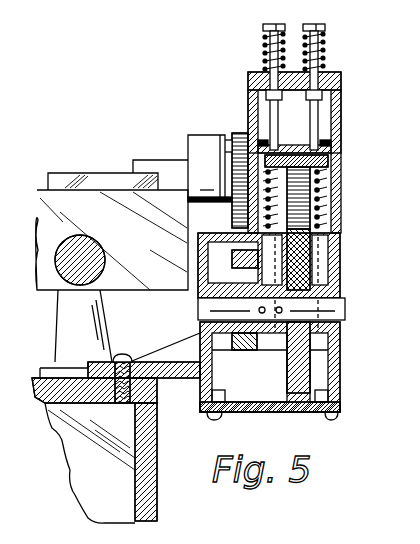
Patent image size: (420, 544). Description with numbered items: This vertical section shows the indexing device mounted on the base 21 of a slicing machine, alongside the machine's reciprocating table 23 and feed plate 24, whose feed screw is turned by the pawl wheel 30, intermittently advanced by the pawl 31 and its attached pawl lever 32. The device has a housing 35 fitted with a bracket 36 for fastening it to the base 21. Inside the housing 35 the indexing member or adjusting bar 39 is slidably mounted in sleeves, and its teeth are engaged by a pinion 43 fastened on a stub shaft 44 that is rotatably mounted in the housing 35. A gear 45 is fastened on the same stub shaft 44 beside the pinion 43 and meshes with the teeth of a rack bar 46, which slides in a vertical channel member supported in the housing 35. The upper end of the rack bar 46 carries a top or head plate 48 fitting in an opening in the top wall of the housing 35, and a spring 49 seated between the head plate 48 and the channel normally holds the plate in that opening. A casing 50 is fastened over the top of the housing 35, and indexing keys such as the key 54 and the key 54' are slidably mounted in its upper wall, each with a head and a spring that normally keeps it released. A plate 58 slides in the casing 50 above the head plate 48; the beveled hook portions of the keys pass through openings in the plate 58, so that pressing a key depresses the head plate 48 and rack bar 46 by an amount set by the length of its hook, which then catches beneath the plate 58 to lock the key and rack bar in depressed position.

The base 21 is at (152, 502).
The reciprocating table 23 is at (142, 290).
The feed plate 24 is at (107, 178).
The pawl wheel 30 is at (240, 133).
The pawl 31 is at (230, 142).
The pawl lever 32 is at (208, 141).
The housing 35 is at (340, 365).
The bracket 36 is at (182, 380).
The indexing member or adjusting bar 39 is at (234, 245).
The pinion 43 is at (240, 352).
The stub shaft 44 is at (340, 308).
The gear 45 is at (300, 250).
The rack bar 46 is at (300, 202).
The top or head plate 48 is at (330, 167).
The spring 49 is at (318, 213).
The casing 50 is at (341, 100).
The indexing key 54 is at (335, 87).
The indexing key 54' is at (257, 87).
The plate 58 is at (322, 146).